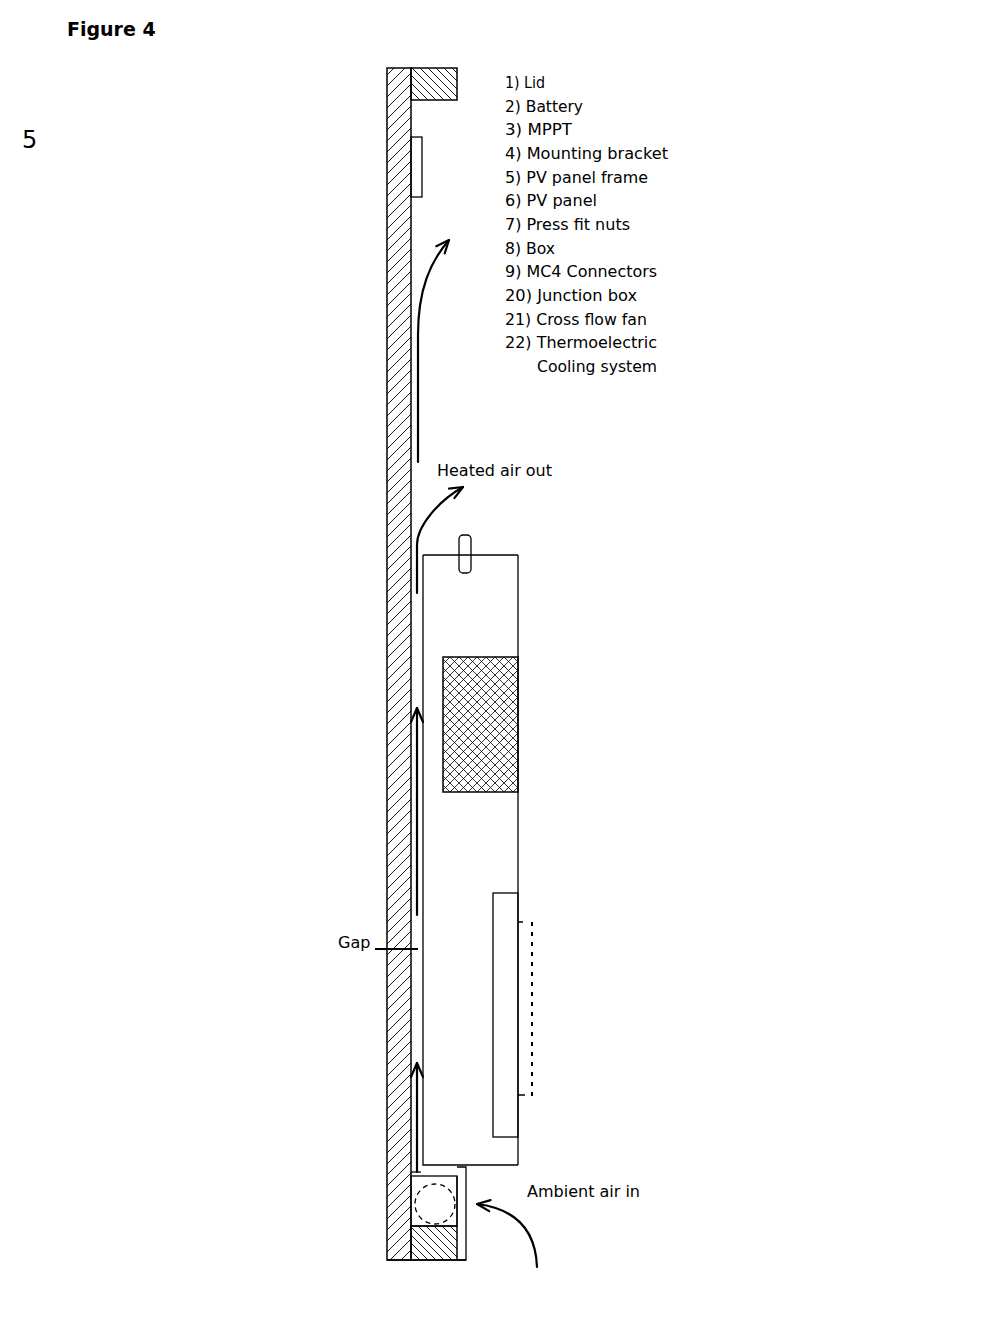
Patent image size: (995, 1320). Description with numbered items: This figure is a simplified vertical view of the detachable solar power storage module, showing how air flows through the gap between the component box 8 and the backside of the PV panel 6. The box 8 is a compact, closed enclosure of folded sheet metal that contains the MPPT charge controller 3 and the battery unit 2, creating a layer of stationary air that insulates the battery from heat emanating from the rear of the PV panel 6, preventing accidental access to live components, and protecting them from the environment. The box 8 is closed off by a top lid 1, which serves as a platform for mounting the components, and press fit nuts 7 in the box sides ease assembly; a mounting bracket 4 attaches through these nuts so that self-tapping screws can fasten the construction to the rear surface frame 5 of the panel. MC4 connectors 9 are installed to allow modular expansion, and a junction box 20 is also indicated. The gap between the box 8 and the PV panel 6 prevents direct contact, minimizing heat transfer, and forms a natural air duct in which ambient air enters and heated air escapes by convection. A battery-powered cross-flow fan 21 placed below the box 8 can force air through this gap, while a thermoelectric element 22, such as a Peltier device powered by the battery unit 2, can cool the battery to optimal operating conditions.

The top lid 1 is at (527, 860).
The battery unit 2 is at (512, 1015).
The MPPT charge controller 3 is at (487, 729).
The mounting bracket 4 is at (446, 664).
The rear surface frame 5 is at (426, 1273).
The PV panel 6 is at (392, 664).
The press fit nuts 7 is at (490, 725).
The box 8 is at (500, 860).
The MC4 connectors 9 is at (473, 575).
The Junction box 20 is at (428, 167).
The cross-flow fan 21 is at (434, 1201).
The thermoelectric element 22 is at (539, 1011).